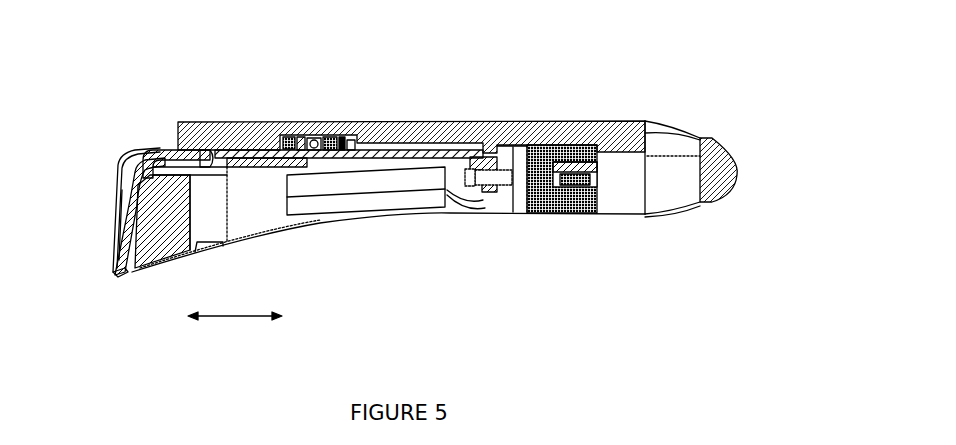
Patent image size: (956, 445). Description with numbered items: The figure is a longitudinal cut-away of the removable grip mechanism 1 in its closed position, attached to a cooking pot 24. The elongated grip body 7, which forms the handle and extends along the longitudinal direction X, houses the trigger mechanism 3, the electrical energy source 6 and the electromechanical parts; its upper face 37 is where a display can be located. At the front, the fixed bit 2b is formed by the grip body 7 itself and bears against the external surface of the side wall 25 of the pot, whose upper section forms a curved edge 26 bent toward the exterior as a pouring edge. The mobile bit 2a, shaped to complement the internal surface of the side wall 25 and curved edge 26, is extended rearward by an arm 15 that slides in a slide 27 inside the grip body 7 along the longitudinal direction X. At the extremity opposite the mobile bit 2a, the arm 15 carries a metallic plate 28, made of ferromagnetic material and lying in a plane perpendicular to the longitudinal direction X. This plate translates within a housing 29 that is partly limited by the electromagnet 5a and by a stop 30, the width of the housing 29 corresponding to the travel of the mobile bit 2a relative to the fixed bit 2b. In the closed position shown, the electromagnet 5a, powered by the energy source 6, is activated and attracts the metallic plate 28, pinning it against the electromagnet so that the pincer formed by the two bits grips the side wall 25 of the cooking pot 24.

The removable grip mechanism 1 is at (330, 90).
The mobile bit 2a is at (118, 182).
The fixed bit 2b is at (127, 273).
The trigger mechanism 3 is at (533, 59).
The electromagnet 5a is at (563, 207).
The electrical energy source 6 is at (330, 214).
The grip body 7 is at (452, 124).
The arm 15 is at (418, 124).
The cooking pot 24 is at (106, 257).
The side wall 25 is at (118, 253).
The curved edge 26 is at (167, 157).
The slide 27 is at (316, 165).
The metallic plate 28 is at (512, 213).
The housing 29 is at (513, 146).
The stop 30 is at (490, 143).
The upper face 37 is at (218, 108).
The longitudinal direction X is at (225, 316).